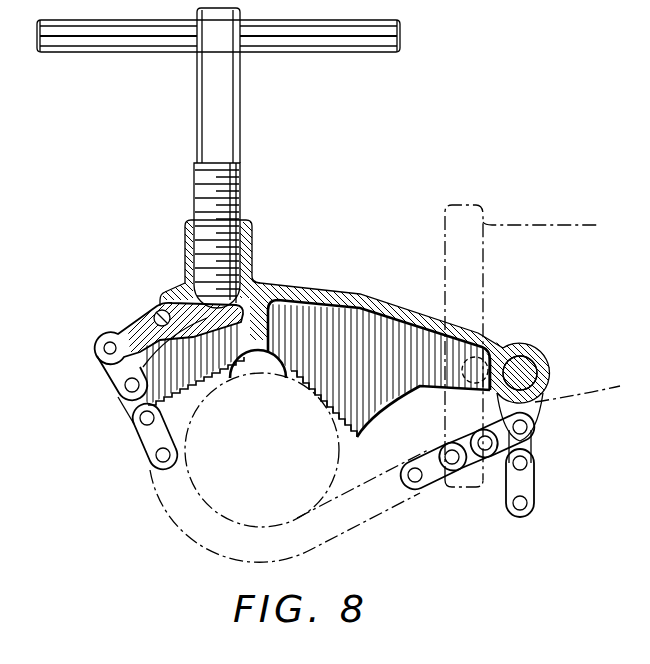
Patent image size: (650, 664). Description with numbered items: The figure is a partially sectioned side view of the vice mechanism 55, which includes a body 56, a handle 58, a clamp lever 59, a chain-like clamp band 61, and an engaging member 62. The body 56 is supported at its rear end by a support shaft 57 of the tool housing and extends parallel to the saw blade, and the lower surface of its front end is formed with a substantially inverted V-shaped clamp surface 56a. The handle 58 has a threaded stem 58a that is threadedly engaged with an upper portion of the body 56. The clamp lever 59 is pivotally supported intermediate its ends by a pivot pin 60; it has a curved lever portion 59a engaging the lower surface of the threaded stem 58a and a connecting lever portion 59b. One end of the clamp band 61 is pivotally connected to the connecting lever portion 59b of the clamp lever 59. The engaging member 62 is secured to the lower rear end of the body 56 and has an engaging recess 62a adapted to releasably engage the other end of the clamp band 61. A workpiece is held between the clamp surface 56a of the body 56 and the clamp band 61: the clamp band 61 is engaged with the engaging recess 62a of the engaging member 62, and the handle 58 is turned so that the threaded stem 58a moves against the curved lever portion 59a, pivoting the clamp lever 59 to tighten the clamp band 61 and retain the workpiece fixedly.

The vice mechanism 55 is at (250, 160).
The body 56 is at (370, 300).
The clamp surface 56a is at (442, 273).
The support shaft 57 is at (537, 388).
The handle 58 is at (140, 52).
The threaded stem 58a is at (202, 203).
The clamp lever 59 is at (136, 325).
The curved lever portion 59a is at (118, 382).
The connecting lever portion 59b is at (118, 334).
The pivot pin 60 is at (158, 310).
The clamp band 61 is at (142, 438).
The engaging member 62 is at (533, 443).
The engaging recess 62a is at (528, 422).